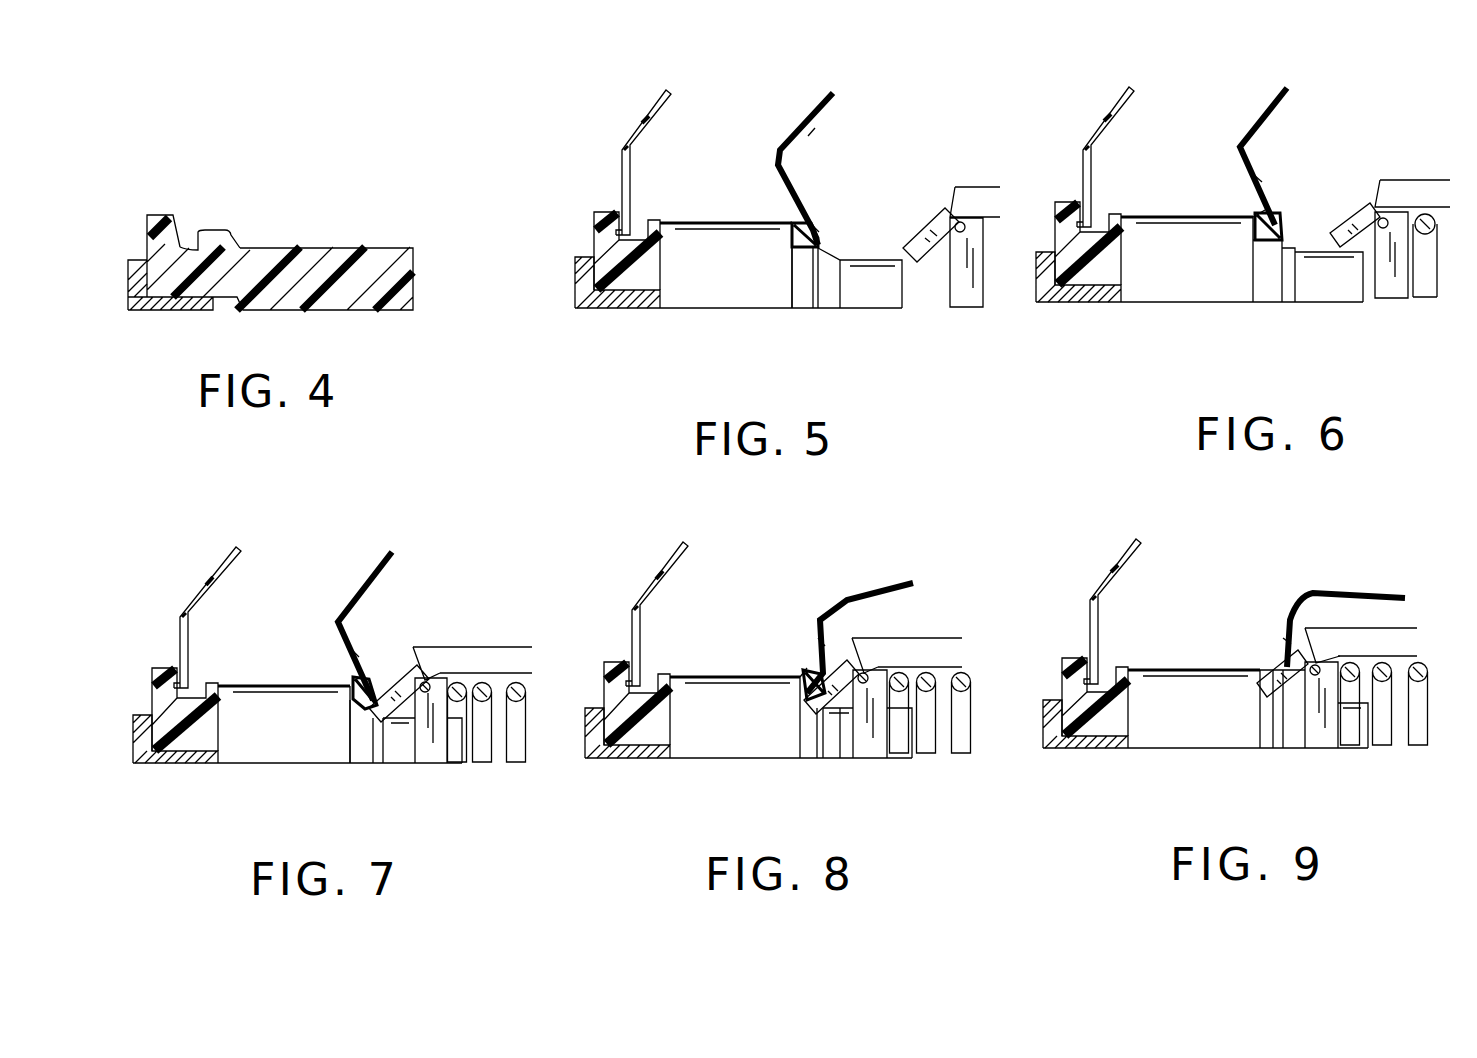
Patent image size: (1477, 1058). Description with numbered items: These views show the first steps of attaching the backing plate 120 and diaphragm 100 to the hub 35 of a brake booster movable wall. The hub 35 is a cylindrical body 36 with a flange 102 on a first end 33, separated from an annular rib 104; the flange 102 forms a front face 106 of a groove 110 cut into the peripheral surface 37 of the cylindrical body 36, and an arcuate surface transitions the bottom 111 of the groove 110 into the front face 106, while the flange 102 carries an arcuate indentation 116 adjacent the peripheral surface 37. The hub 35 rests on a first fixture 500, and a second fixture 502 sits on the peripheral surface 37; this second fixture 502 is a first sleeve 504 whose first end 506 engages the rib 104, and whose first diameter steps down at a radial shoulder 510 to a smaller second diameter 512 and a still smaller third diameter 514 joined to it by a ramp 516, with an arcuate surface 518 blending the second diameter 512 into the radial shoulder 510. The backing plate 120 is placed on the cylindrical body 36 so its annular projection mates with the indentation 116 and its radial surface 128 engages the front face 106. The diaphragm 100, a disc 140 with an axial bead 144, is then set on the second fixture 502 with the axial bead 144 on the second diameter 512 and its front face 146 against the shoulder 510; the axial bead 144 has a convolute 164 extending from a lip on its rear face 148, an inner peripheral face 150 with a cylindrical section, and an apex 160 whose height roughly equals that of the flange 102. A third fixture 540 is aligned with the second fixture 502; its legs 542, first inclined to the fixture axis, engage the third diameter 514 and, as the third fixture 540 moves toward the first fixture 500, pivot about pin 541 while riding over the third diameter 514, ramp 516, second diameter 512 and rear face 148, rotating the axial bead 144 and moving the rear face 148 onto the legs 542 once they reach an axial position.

In FIG. 5, the first end 33 is at (567, 165).
In FIG. 5, the hub 35 is at (540, 218).
In FIG. 6, the hub 35 is at (1023, 233).
In FIG. 4, the cylindrical body 36 is at (387, 257).
In FIG. 4, the peripheral surface 37 is at (343, 247).
In FIG. 5, the diaphragm 100 is at (845, 150).
In FIG. 6, the diaphragm 100 is at (1299, 150).
In FIG. 7, the diaphragm 100 is at (365, 603).
In FIG. 8, the diaphragm 100 is at (871, 609).
In FIG. 9, the diaphragm 100 is at (1363, 610).
In FIG. 4, the flange 102 is at (150, 213).
In FIG. 5, the flange 102 is at (621, 221).
In FIG. 6, the flange 102 is at (1071, 208).
In FIG. 7, the flange 102 is at (175, 681).
In FIG. 8, the flange 102 is at (621, 673).
In FIG. 9, the flange 102 is at (1082, 671).
In FIG. 4, the annular rib 104 is at (222, 233).
In FIG. 5, the annular rib 104 is at (684, 169).
In FIG. 6, the annular rib 104 is at (1120, 199).
In FIG. 7, the annular rib 104 is at (218, 659).
In FIG. 8, the annular rib 104 is at (677, 661).
In FIG. 9, the annular rib 104 is at (1128, 653).
In FIG. 5, the front face 106 is at (560, 248).
In FIG. 5, the groove 110 is at (684, 183).
In FIG. 6, the groove 110 is at (1124, 180).
In FIG. 5, the bottom 111 is at (625, 330).
In FIG. 5, the arcuate indentation 116 is at (549, 190).
In FIG. 5, the backing plate 120 is at (644, 148).
In FIG. 6, the backing plate 120 is at (1105, 139).
In FIG. 7, the backing plate 120 is at (208, 598).
In FIG. 8, the backing plate 120 is at (657, 593).
In FIG. 9, the backing plate 120 is at (1103, 606).
In FIG. 5, the radial surface 128 is at (602, 204).
In FIG. 5, the disc 140 is at (839, 128).
In FIG. 5, the axial bead 144 is at (850, 223).
In FIG. 6, the axial bead 144 is at (1220, 179).
In FIG. 8, the axial bead 144 is at (777, 621).
In FIG. 9, the axial bead 144 is at (1257, 664).
In FIG. 5, the front face 146 is at (763, 296).
In FIG. 6, the front face 146 is at (1252, 290).
In FIG. 7, the front face 146 is at (315, 775).
In FIG. 8, the front face 146 is at (790, 757).
In FIG. 5, the rear face 148 is at (841, 239).
In FIG. 6, the rear face 148 is at (1290, 212).
In FIG. 7, the rear face 148 is at (385, 649).
In FIG. 8, the rear face 148 is at (833, 746).
In FIG. 5, the inner peripheral face 150 is at (825, 315).
In FIG. 5, the apex 160 is at (788, 115).
In FIG. 5, the convolute 164 is at (832, 188).
In FIG. 6, the convolute 164 is at (1287, 157).
In FIG. 7, the convolute 164 is at (321, 657).
In FIG. 8, the convolute 164 is at (800, 622).
In FIG. 9, the convolute 164 is at (1270, 600).
In FIG. 4, the first fixture 500 is at (188, 313).
In FIG. 5, the first fixture 500 is at (604, 306).
In FIG. 6, the first fixture 500 is at (1083, 300).
In FIG. 7, the first fixture 500 is at (175, 766).
In FIG. 8, the first fixture 500 is at (627, 759).
In FIG. 9, the first fixture 500 is at (1085, 750).
In FIG. 5, the second fixture 502 is at (830, 236).
In FIG. 6, the second fixture 502 is at (1351, 314).
In FIG. 7, the second fixture 502 is at (461, 780).
In FIG. 8, the second fixture 502 is at (901, 769).
In FIG. 9, the second fixture 502 is at (1381, 745).
In FIG. 5, the first sleeve 504 is at (738, 293).
In FIG. 6, the first sleeve 504 is at (1199, 290).
In FIG. 7, the first sleeve 504 is at (297, 753).
In FIG. 8, the first sleeve 504 is at (748, 751).
In FIG. 9, the first sleeve 504 is at (1205, 737).
In FIG. 5, the first end 506 is at (717, 197).
In FIG. 5, the radial shoulder 510 is at (752, 320).
In FIG. 5, the second diameter 512 is at (790, 332).
In FIG. 7, the second diameter 512 is at (355, 766).
In FIG. 5, the third diameter 514 is at (900, 204).
In FIG. 6, the third diameter 514 is at (1329, 303).
In FIG. 5, the ramp 516 is at (840, 300).
In FIG. 6, the ramp 516 is at (1321, 230).
In FIG. 7, the ramp 516 is at (395, 784).
In FIG. 5, the arcuate surface 518 is at (744, 337).
In FIG. 5, the third fixture 540 is at (975, 275).
In FIG. 6, the third fixture 540 is at (1412, 263).
In FIG. 7, the third fixture 540 is at (472, 732).
In FIG. 8, the third fixture 540 is at (911, 721).
In FIG. 9, the third fixture 540 is at (1366, 715).
In FIG. 7, the pin 541 is at (452, 642).
In FIG. 8, the pin 541 is at (923, 651).
In FIG. 9, the pin 541 is at (1348, 640).
In FIG. 5, the legs 542 is at (931, 184).
In FIG. 6, the legs 542 is at (1362, 179).
In FIG. 7, the legs 542 is at (416, 639).
In FIG. 8, the legs 542 is at (854, 660).
In FIG. 9, the legs 542 is at (1298, 724).